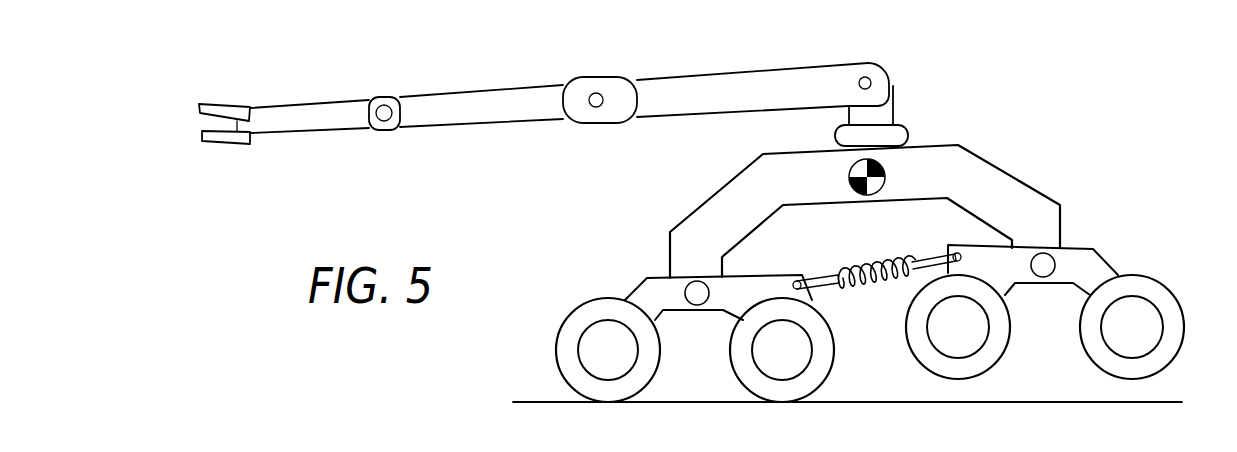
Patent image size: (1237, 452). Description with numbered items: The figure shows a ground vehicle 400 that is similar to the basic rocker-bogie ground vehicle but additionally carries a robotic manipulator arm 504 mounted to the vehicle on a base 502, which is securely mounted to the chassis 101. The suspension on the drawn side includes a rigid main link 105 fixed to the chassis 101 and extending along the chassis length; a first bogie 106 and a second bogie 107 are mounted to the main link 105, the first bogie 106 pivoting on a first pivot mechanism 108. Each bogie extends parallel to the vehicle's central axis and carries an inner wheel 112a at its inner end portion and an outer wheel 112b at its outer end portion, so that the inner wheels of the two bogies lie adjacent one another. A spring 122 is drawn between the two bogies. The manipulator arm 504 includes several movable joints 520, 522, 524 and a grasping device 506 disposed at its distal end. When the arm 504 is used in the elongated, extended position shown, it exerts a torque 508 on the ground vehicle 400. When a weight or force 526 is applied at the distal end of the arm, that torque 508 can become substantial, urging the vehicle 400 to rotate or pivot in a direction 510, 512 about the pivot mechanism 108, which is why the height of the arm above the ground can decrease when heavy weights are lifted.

The chassis 101 is at (933, 143).
The main link 105 is at (867, 227).
The first bogie 106 is at (650, 297).
The second bogie 107 is at (1078, 258).
The first pivot mechanism 108 is at (707, 302).
The inner wheel 112a is at (730, 377).
The outer wheel 112b is at (554, 352).
The spring 122 is at (889, 284).
The ground vehicle 400 is at (1050, 142).
The base 502 is at (893, 108).
The robotic manipulator arm 504 is at (504, 125).
The grasping device 506 is at (223, 103).
The torque 508 is at (874, 64).
The direction 510 is at (718, 265).
The direction 512 is at (1148, 277).
The movable joint 520 is at (381, 97).
The movable joint 522 is at (594, 78).
The movable joint 524 is at (879, 68).
The weight or force 526 is at (215, 135).